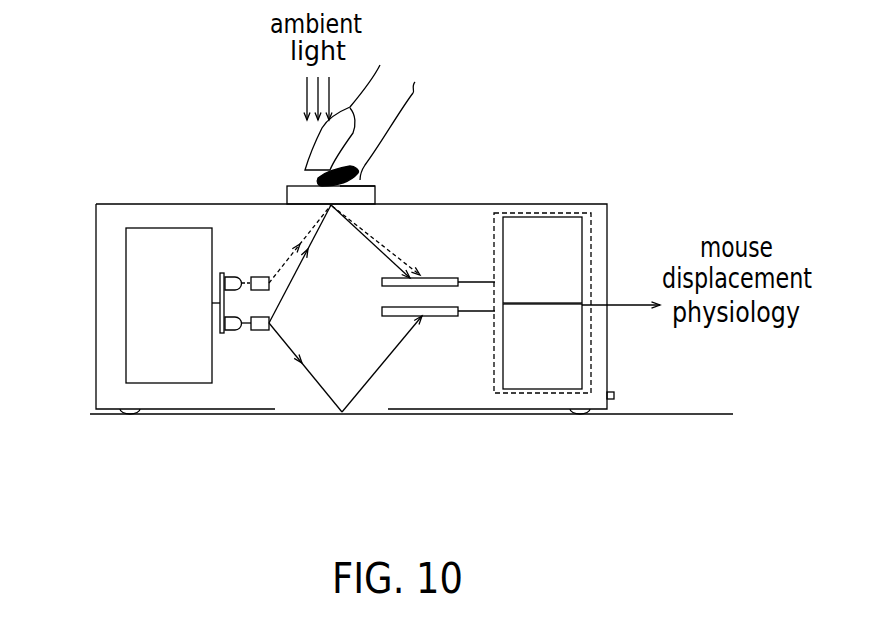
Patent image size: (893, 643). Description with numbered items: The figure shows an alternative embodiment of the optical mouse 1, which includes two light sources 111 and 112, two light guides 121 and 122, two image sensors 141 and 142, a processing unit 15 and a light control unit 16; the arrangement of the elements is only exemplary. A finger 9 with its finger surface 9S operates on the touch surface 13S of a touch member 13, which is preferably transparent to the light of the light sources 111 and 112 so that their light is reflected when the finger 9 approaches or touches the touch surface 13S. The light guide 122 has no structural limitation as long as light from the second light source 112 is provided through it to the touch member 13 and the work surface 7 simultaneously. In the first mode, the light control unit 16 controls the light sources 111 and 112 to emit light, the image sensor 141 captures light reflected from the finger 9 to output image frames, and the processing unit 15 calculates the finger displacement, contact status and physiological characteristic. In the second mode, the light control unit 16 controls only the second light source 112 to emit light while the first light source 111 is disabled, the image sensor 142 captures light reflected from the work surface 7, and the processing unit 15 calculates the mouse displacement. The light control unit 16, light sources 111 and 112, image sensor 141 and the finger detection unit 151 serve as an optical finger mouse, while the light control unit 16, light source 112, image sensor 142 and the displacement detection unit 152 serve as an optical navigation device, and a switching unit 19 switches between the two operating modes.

The optical mouse 1 is at (632, 180).
The work surface 7 is at (700, 414).
The finger 9 is at (379, 62).
The finger surface 9S is at (316, 180).
The touch member 13 is at (287, 199).
The touch surface 13S is at (370, 186).
The light control unit 16 is at (126, 303).
The first light source 111 is at (225, 273).
The second light source 112 is at (226, 335).
The light guide 121 is at (261, 277).
The light guide 122 is at (261, 330).
The image sensor 141 is at (457, 278).
The image sensor 142 is at (442, 317).
The processing unit 15 is at (591, 265).
The finger detection unit 151 is at (582, 231).
The displacement detection unit 152 is at (582, 353).
The switching unit 19 is at (614, 396).